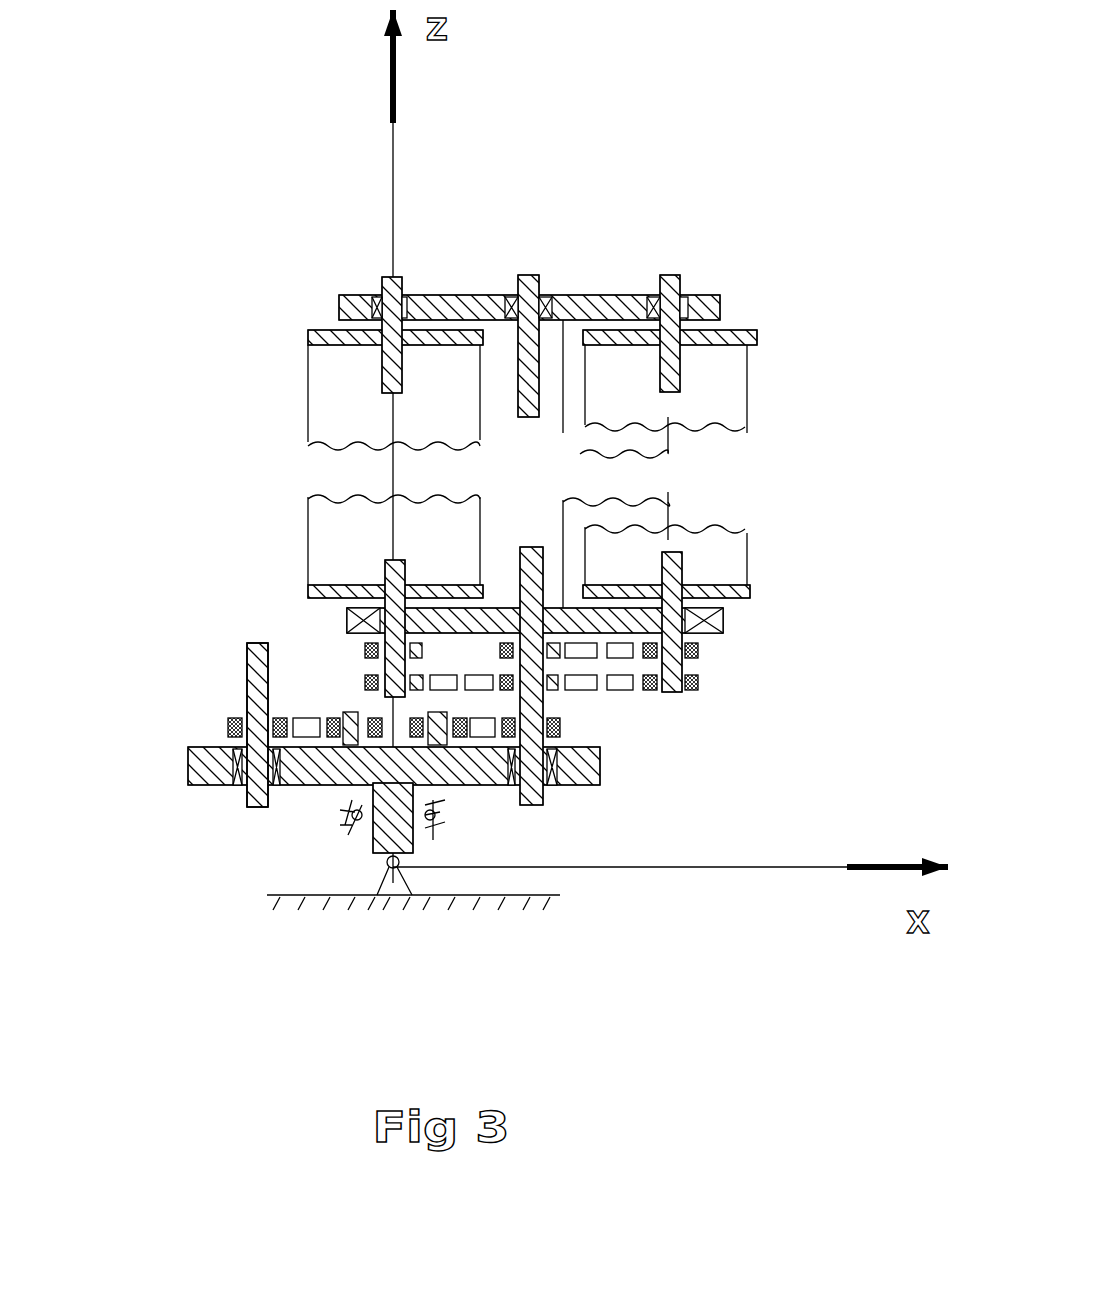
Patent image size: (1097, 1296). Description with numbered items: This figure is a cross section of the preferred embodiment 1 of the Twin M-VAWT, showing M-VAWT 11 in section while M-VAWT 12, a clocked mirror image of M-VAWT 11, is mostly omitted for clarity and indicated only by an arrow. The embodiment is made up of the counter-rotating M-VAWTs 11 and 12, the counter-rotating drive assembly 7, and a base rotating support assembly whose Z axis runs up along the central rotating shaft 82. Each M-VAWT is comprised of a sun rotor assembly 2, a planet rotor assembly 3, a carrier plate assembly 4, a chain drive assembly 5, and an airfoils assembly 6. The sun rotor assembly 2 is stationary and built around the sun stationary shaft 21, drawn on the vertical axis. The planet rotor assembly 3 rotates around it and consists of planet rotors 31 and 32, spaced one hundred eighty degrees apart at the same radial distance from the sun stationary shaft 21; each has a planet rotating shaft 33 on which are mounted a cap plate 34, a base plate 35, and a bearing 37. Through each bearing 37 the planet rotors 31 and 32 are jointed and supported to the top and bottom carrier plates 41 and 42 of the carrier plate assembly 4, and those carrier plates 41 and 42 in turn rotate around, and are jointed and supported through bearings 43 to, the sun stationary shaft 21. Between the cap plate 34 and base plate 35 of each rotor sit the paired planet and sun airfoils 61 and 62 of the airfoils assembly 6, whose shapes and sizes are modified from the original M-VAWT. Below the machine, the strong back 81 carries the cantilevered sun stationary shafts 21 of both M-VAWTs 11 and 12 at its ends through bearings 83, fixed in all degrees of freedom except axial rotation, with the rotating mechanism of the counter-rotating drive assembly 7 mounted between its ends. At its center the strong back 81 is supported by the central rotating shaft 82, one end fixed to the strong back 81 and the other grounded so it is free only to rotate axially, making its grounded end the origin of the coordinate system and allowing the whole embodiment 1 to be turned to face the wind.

The preferred embodiment 1 is at (842, 107).
The sun rotor assembly 2 is at (808, 1037).
The planet rotor assembly 3 is at (808, 1037).
The carrier plate assembly 4 is at (808, 1037).
The chain drive assembly 5 is at (665, 952).
The airfoils assembly 6 is at (748, 927).
The counter-rotating drive assembly 7 is at (568, 968).
The M-VAWT 11 is at (838, 260).
The M-VAWT 12 is at (135, 302).
The sun stationary shaft 21 is at (530, 277).
The planet rotor 31 is at (673, 277).
The planet rotor 32 is at (393, 278).
The planet rotating shaft 33 is at (527, 397).
The cap plate 34 is at (308, 335).
The base plate 35 is at (308, 588).
The bearing 37 is at (370, 290).
The top carrier plate 41 is at (715, 288).
The bottom carrier plate 42 is at (693, 617).
The bearing 43 is at (507, 290).
The planet airfoil 61 is at (317, 515).
The sun airfoil 62 is at (493, 405).
The strong back 81 is at (600, 780).
The central rotating shaft 82 is at (372, 827).
The bearing 83 is at (237, 783).